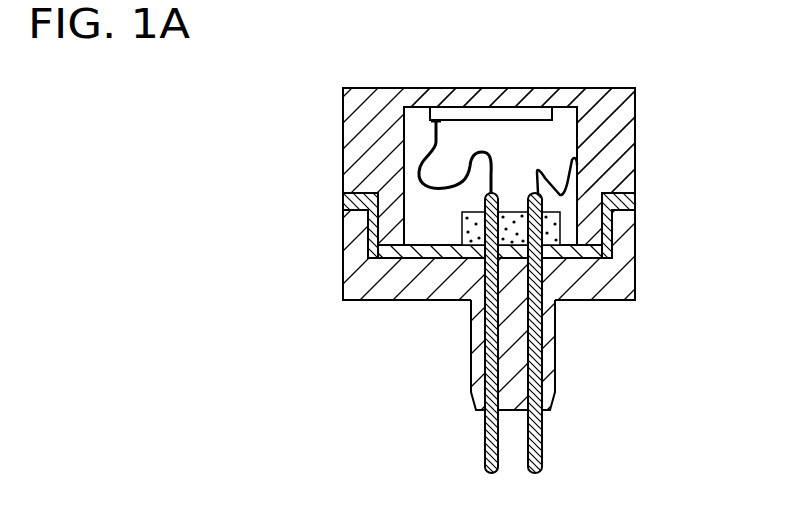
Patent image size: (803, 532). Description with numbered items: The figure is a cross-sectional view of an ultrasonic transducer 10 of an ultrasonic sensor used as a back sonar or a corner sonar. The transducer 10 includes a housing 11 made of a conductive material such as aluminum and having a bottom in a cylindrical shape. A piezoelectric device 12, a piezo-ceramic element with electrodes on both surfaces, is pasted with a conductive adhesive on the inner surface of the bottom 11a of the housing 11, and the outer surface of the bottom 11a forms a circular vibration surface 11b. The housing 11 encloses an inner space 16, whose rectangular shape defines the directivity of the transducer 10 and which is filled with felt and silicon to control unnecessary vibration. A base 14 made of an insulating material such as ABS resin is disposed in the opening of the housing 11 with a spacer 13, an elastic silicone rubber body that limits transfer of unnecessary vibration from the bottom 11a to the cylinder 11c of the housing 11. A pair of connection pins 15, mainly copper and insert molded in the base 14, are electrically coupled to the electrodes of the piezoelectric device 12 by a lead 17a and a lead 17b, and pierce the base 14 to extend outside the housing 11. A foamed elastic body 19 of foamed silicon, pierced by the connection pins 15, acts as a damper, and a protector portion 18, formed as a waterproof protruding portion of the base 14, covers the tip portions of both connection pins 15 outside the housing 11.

The ultrasonic transducer 10 is at (668, 78).
The housing 11 is at (343, 118).
The bottom 11a is at (421, 97).
The vibration surface 11b is at (543, 93).
The cylinder 11c is at (624, 129).
The piezoelectric device 12 is at (485, 106).
The spacer 13 is at (637, 197).
The base 14 is at (620, 283).
The connection pin 15 is at (537, 442).
The inner space 16 is at (412, 188).
The lead 17a is at (437, 142).
The lead 17b is at (543, 168).
The protector portion 18 is at (548, 353).
The foamed elastic body 19 is at (448, 258).